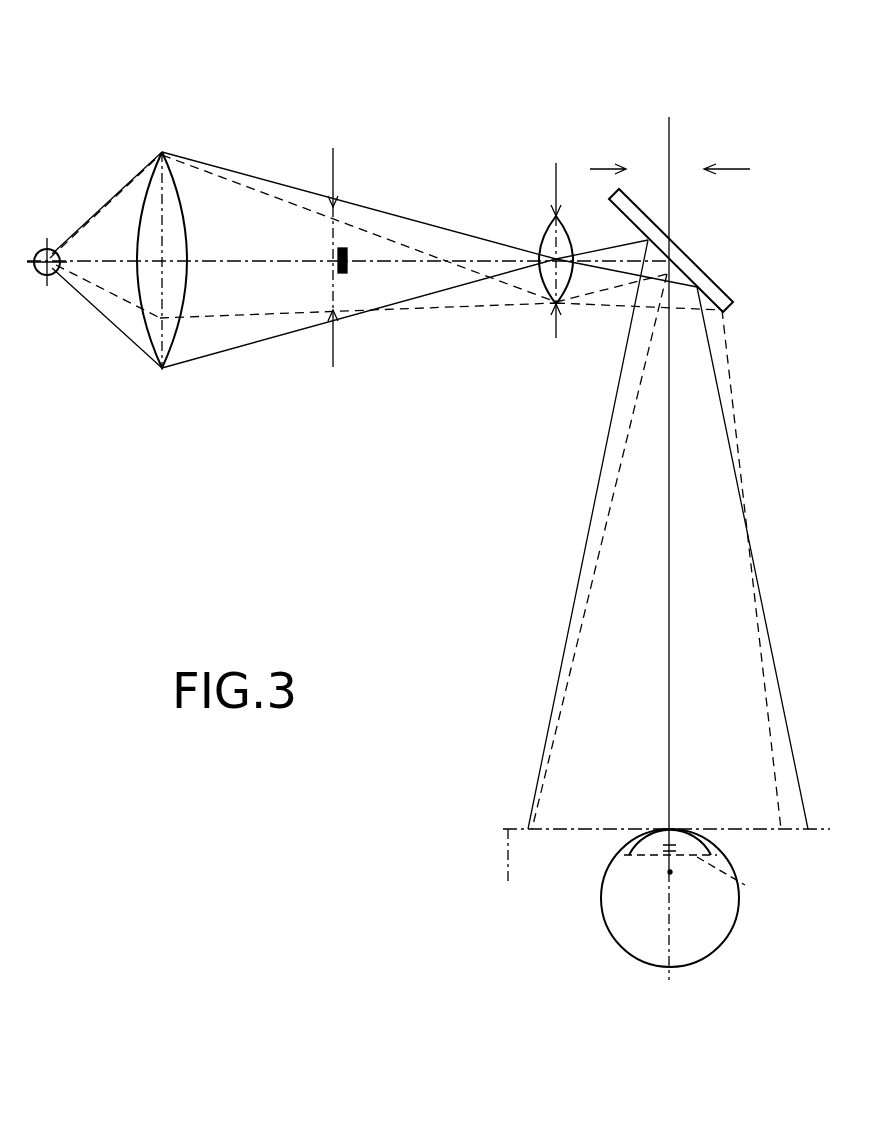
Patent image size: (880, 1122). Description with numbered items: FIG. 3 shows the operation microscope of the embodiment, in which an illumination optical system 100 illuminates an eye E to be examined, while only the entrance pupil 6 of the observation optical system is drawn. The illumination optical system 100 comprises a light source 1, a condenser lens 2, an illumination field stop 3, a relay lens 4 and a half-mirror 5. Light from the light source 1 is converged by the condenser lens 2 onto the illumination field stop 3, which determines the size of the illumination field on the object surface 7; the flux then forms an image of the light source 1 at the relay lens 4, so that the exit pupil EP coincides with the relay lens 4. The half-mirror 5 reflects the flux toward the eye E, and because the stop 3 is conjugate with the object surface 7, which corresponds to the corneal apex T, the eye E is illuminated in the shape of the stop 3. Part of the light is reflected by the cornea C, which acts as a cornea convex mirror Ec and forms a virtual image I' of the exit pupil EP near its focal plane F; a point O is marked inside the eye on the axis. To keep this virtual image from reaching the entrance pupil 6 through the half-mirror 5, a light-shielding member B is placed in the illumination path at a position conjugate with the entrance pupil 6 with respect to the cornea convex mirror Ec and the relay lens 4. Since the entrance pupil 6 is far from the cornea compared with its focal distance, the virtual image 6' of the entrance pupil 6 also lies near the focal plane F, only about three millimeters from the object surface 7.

The illumination optical system 100 is at (293, 97).
The light source 1 is at (37, 251).
The condenser lens 2 is at (162, 150).
The illumination field stop 3 is at (336, 172).
The light-shielding member B is at (343, 276).
The relay lens 4 is at (545, 232).
The exit pupil EP is at (553, 328).
The half-mirror 5 is at (727, 290).
The entrance pupil 6 is at (670, 139).
The object surface 7 is at (665, 871).
The eye to be examined E is at (732, 927).
The cornea convex mirror Ec is at (652, 828).
The corneal apex T is at (668, 828).
The cornea C is at (688, 828).
The virtual image of the entrance pupil 6' is at (639, 849).
The virtual image of the exit pupil I' is at (735, 849).
The center of curvature of cornea O is at (669, 873).
The focal plane F is at (742, 882).